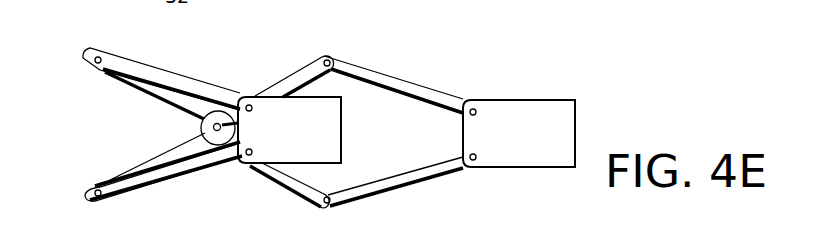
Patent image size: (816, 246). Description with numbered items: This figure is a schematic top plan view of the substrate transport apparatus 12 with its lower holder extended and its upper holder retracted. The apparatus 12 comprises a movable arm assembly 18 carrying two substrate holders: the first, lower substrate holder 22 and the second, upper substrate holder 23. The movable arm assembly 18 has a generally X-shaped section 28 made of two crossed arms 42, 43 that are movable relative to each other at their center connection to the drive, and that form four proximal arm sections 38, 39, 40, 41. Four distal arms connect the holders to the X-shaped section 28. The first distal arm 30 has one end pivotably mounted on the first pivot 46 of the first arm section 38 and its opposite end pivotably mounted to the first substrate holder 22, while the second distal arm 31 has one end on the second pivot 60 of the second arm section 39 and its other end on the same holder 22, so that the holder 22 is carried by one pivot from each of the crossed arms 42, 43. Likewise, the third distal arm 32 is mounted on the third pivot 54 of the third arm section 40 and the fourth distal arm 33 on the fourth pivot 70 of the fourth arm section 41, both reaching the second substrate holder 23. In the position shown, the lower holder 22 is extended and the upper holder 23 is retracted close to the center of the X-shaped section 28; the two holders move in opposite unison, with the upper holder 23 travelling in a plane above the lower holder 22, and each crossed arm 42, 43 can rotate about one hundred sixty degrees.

The transport apparatus 12 is at (598, 72).
The movable arm assembly 18 is at (377, 68).
The first substrate holder 22 is at (533, 142).
The second substrate holder 23 is at (303, 141).
The X-shaped section 28 is at (127, 170).
The first distal arm 30 is at (438, 85).
The second distal arm 31 is at (437, 183).
The third distal arm 32 is at (157, 187).
The fourth distal arm 33 is at (170, 70).
The first arm section 38 is at (289, 73).
The second arm section 39 is at (287, 183).
The third arm section 40 is at (162, 147).
The fourth arm section 41 is at (132, 93).
The first crossed arm 42 is at (260, 91).
The second crossed arm 43 is at (265, 172).
The first pivot 46 is at (328, 58).
The third pivot 54 is at (86, 195).
The second pivot 60 is at (333, 207).
The fourth pivot 70 is at (99, 53).